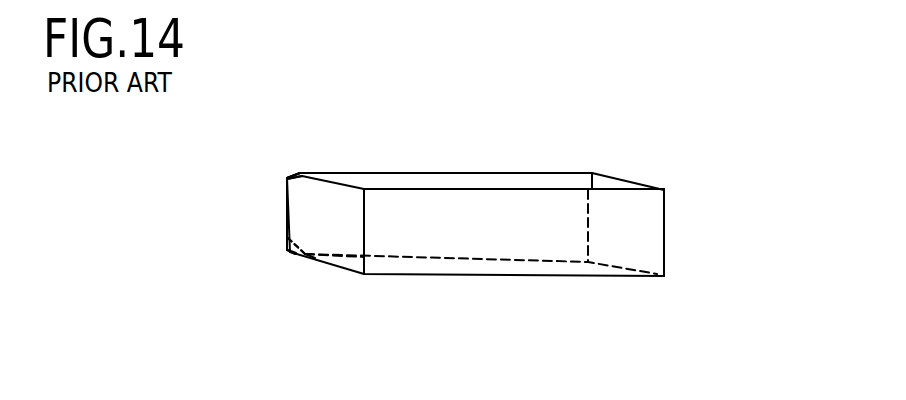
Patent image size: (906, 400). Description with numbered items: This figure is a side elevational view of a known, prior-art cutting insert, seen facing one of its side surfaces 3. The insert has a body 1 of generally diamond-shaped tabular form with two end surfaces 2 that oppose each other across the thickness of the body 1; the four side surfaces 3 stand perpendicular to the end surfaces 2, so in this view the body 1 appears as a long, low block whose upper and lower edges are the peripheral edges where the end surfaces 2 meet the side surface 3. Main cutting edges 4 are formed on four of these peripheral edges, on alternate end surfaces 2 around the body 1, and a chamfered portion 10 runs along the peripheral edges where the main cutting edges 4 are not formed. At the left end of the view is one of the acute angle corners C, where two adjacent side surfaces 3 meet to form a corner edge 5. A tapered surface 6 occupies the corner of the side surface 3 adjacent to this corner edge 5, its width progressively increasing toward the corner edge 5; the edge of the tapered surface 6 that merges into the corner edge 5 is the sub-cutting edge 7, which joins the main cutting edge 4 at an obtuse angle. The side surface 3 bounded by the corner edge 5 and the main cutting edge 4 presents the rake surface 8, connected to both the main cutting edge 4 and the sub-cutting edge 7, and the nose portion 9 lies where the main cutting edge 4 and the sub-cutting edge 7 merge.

The body 1 is at (628, 180).
The end surfaces 2 is at (556, 189).
The side surfaces 3 is at (346, 203).
The main cutting edges 4 is at (333, 174).
The corner edges 5 is at (287, 212).
The tapered surface 6 is at (288, 180).
The sub-cutting edge 7 is at (288, 187).
The rake surface 8 is at (308, 256).
The nose portion 9 is at (291, 174).
The chamfered portion 10 is at (302, 171).
The acute angle corners C is at (280, 226).